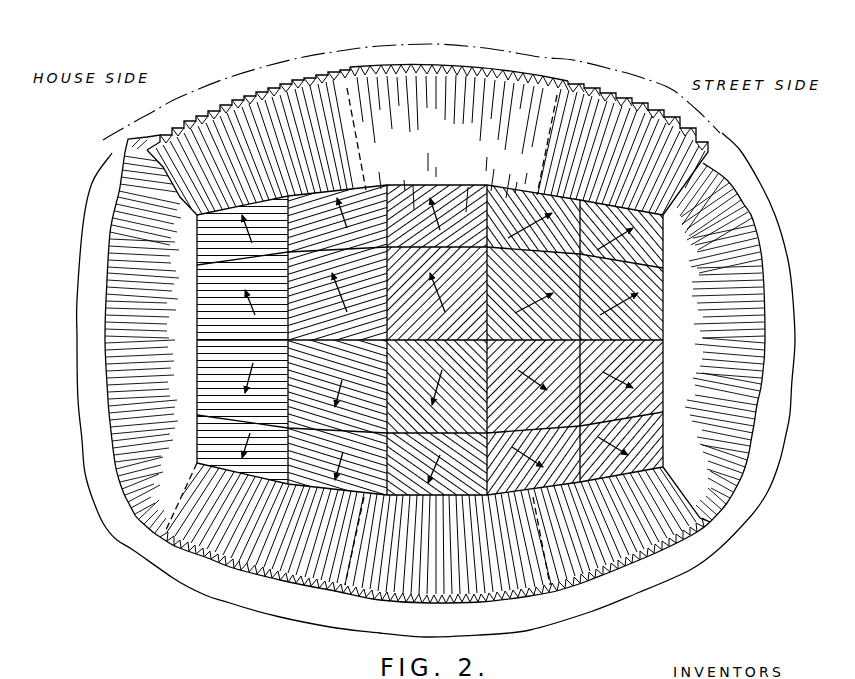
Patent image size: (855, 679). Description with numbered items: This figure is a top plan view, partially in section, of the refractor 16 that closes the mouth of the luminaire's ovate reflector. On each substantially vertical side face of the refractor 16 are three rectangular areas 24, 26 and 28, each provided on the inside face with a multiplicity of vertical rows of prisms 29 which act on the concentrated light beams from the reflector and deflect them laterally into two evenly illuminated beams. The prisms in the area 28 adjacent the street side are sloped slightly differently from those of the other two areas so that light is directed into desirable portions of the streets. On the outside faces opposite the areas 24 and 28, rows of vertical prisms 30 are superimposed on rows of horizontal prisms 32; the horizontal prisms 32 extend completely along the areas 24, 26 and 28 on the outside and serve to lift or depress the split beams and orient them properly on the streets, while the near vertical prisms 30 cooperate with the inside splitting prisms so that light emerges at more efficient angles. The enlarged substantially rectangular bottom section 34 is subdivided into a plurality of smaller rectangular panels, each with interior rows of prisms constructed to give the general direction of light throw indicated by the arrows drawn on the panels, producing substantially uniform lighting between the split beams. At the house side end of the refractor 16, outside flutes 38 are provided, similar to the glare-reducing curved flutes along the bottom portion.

The refractor 16 is at (220, 604).
The rectangular area 24 is at (278, 157).
The rectangular area 26 is at (461, 142).
The rectangular area 28 is at (615, 166).
The prisms 29 is at (612, 122).
The vertical prisms 30 is at (231, 97).
The horizontal prisms 32 is at (432, 62).
The bottom section 34 is at (435, 332).
The flutes 38 is at (128, 152).